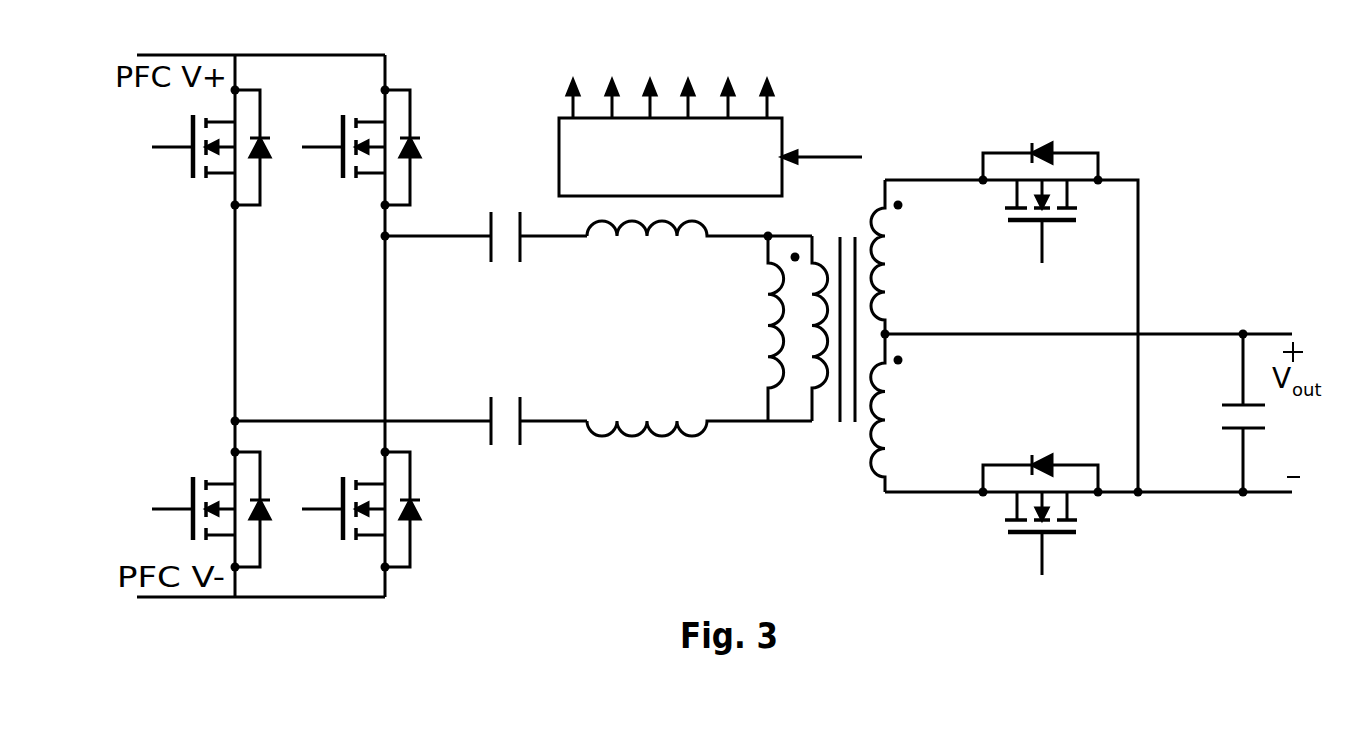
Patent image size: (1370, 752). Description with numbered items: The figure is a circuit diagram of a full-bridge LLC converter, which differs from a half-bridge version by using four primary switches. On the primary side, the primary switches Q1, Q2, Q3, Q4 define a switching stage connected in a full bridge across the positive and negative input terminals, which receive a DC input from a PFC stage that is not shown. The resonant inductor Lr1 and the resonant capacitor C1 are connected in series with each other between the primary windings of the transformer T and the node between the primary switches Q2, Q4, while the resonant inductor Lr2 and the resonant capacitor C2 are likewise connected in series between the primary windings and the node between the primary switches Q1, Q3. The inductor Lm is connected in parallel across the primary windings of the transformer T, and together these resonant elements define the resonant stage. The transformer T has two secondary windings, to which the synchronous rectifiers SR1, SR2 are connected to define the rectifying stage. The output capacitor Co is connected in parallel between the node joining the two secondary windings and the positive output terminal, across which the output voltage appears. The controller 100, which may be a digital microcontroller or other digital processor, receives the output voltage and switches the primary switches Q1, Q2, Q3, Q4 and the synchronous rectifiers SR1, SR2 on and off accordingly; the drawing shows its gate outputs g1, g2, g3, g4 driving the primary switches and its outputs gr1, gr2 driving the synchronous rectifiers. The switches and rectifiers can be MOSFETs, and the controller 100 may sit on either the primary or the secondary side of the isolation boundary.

The controller 100 is at (559, 140).
The primary switch Q1 is at (248, 143).
The primary switch Q2 is at (398, 143).
The primary switch Q3 is at (398, 509).
The primary switch Q4 is at (248, 509).
The gate signal g1 is at (172, 130).
The gate signal g2 is at (322, 130).
The gate signal g3 is at (322, 491).
The gate signal g4 is at (172, 491).
The resonant capacitor C1 is at (486, 219).
The resonant capacitor C2 is at (411, 438).
The resonant inductor Lr1 is at (697, 248).
The resonant inductor Lr2 is at (695, 412).
The inductor Lm is at (750, 327).
The transformer T is at (847, 336).
The synchronous rectifier SR1 is at (1017, 174).
The synchronous rectifier SR2 is at (1016, 482).
The gate signal gr1 is at (1022, 241).
The gate signal gr2 is at (1021, 555).
The output capacitor Co is at (1234, 413).